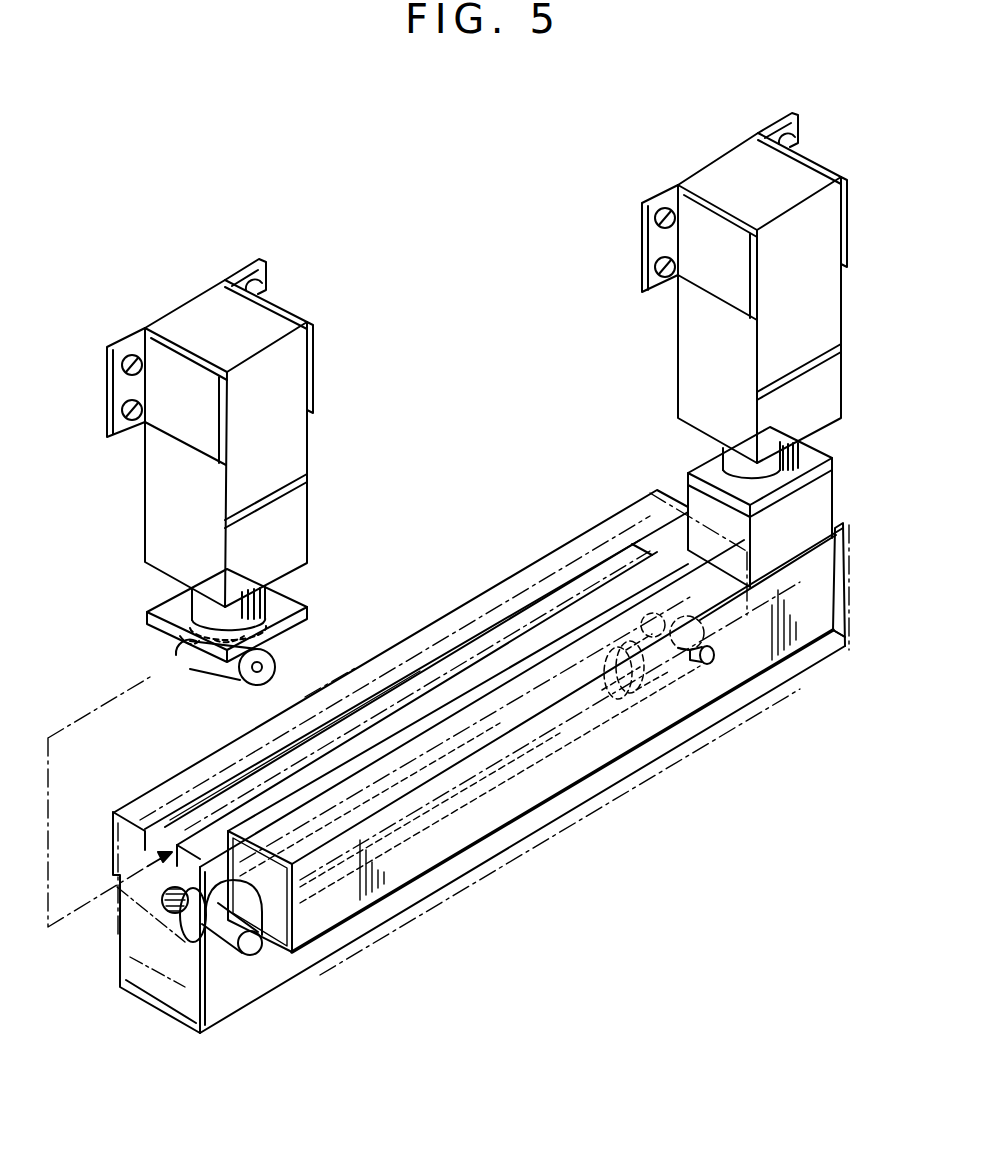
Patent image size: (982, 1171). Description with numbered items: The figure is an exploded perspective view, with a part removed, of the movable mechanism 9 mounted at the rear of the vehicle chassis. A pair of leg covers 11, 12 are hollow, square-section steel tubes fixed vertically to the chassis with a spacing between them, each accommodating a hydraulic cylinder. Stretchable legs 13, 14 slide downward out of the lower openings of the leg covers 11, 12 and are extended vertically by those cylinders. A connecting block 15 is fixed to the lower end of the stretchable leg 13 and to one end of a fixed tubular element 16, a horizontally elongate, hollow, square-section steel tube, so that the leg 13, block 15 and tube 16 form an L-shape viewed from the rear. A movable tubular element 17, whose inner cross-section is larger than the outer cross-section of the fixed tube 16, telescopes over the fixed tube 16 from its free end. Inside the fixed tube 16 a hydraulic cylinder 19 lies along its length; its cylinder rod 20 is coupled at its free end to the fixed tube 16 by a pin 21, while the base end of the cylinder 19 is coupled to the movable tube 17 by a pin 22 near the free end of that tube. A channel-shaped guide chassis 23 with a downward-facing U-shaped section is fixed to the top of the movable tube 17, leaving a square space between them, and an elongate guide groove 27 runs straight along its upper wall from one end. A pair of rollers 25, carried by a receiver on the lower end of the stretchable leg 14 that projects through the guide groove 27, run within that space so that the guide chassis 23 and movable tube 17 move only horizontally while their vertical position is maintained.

The movable mechanism 9 is at (450, 415).
The leg cover 11 is at (690, 373).
The leg cover 12 is at (298, 437).
The stretchable leg 13 is at (733, 458).
The stretchable leg 14 is at (195, 603).
The connecting block 15 is at (825, 493).
The fixed tubular element 16 is at (745, 670).
The movable tubular element 17 is at (545, 830).
The hydraulic cylinder 19 is at (430, 835).
The cylinder rod 20 is at (655, 678).
The pin 21 is at (708, 665).
The pin 22 is at (253, 945).
The channel-shaped guide chassis 23 is at (595, 535).
The rollers 25 is at (182, 648).
The guide groove 27 is at (468, 642).